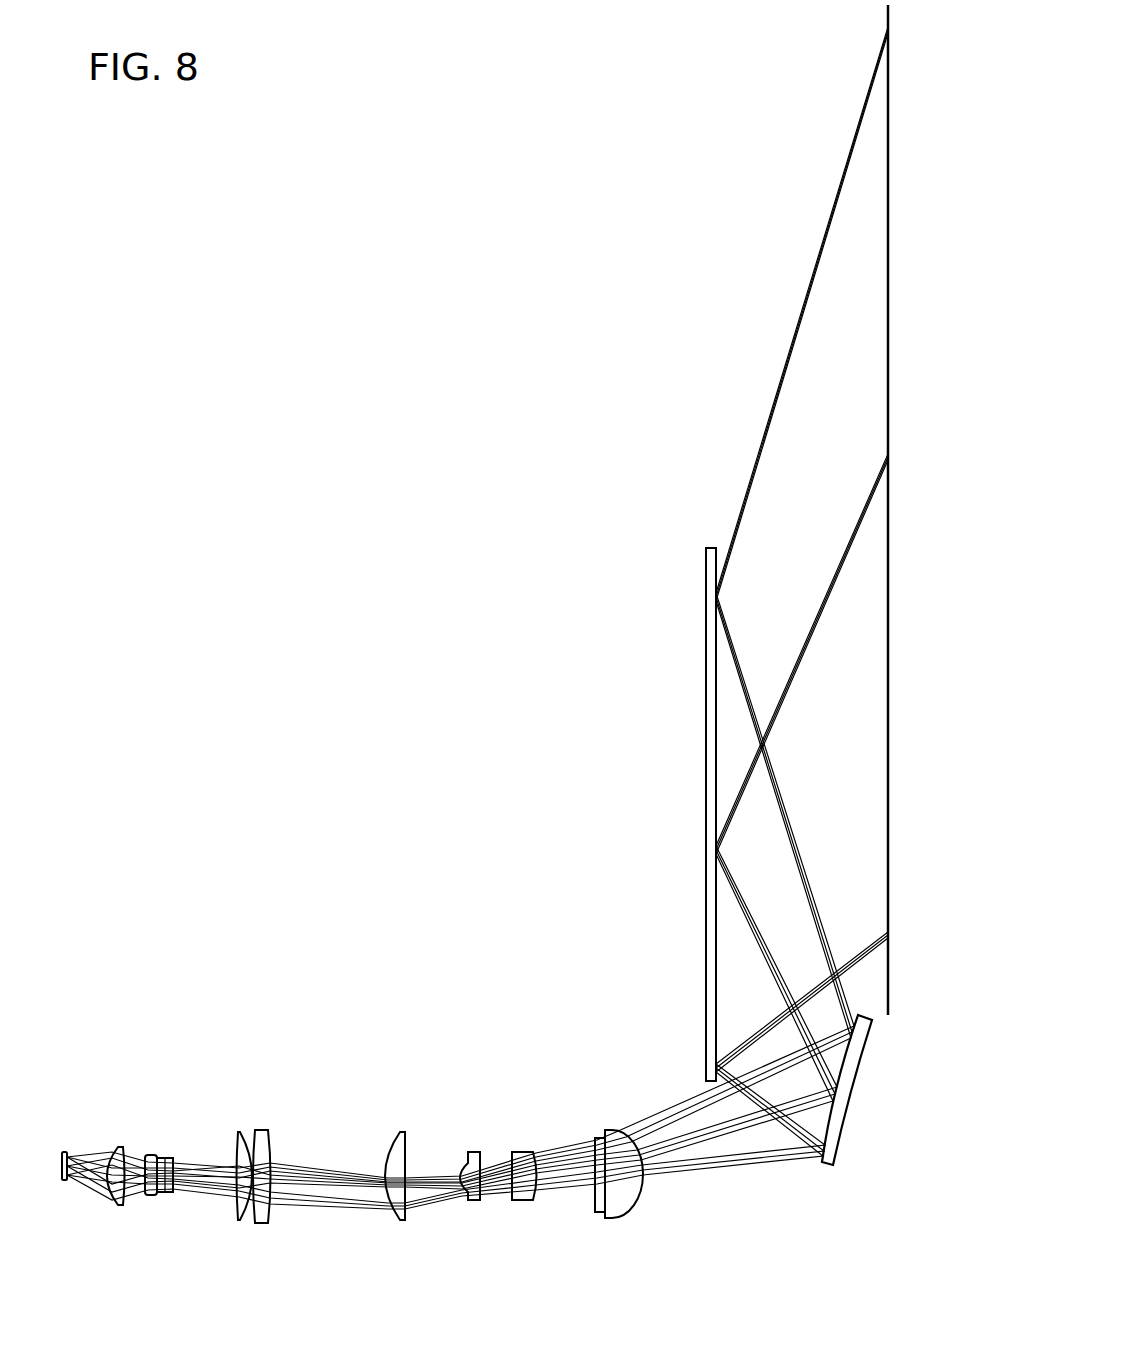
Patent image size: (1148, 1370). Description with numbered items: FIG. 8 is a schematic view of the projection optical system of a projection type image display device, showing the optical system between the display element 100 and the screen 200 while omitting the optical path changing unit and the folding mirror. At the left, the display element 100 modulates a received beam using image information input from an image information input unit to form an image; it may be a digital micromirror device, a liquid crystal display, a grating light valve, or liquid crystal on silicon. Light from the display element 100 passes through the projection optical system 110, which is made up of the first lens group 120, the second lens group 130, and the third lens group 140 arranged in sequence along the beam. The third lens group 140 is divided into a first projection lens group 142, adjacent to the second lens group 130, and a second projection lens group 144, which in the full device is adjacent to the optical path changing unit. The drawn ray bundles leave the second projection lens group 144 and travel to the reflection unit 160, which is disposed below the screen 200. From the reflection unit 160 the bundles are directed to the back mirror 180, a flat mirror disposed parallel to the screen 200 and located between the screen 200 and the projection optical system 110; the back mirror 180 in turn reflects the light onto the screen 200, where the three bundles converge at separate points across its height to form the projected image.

The display element 100 is at (65, 1181).
The projection optical system 110 is at (672, 1103).
The first lens group 120 is at (173, 1209).
The second lens group 130 is at (405, 1226).
The third lens group 140 is at (551, 1215).
The first projection lens group 142 is at (543, 1209).
The second projection lens group 144 is at (616, 1194).
The reflection unit 160 is at (845, 1068).
The back mirror 180 is at (707, 766).
The screen 200 is at (888, 393).